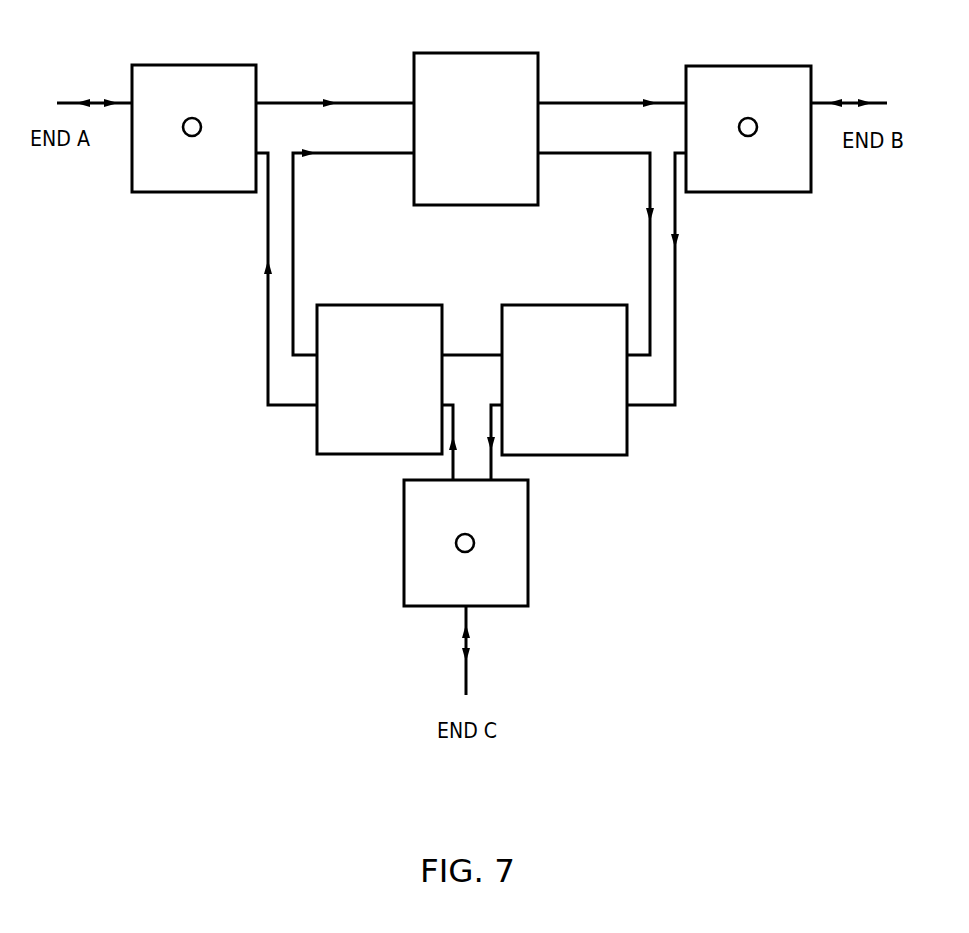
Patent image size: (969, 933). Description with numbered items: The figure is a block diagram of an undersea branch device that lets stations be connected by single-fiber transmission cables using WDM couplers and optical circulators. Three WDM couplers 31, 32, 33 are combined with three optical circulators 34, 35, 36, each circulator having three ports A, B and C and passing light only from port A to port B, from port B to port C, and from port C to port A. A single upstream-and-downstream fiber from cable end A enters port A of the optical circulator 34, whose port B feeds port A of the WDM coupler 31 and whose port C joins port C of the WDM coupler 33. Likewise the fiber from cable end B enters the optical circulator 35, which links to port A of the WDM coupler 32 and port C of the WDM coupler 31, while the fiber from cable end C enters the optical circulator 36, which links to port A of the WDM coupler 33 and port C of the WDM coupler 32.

The WDM coupler 31 is at (483, 53).
The WDM coupler 32 is at (555, 305).
The WDM coupler 33 is at (358, 305).
The optical circulator 34 is at (163, 65).
The optical circulator 35 is at (775, 66).
The optical circulator 36 is at (528, 555).